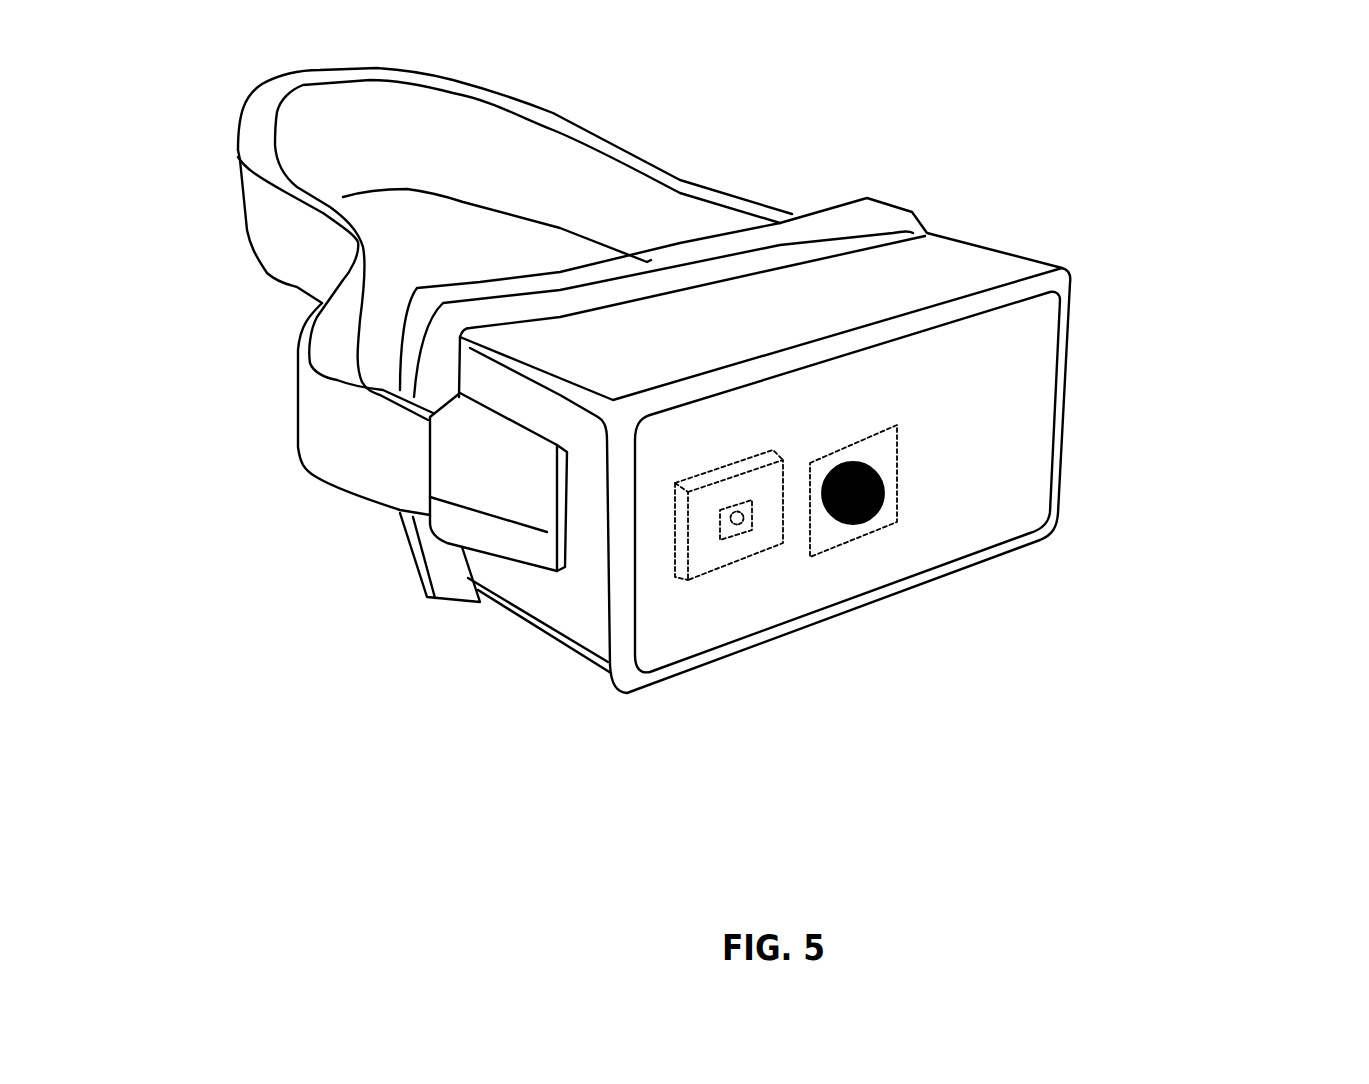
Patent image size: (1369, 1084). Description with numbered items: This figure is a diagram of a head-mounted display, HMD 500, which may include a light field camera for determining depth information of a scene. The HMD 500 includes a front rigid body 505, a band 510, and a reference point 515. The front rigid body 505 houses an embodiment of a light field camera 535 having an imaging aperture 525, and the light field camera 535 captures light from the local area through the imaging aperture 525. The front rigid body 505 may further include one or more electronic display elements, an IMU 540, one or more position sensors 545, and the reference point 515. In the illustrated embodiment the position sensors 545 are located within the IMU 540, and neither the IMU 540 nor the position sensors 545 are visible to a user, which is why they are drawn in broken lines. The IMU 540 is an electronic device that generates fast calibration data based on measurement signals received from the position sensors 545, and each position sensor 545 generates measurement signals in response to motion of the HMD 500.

The head-mounted display (HMD) 500 is at (115, 82).
The front rigid body 505 is at (1072, 278).
The band 510 is at (663, 152).
The reference point 515 is at (737, 526).
The imaging aperture 525 is at (884, 493).
The light field camera 535 is at (896, 463).
The IMU 540 is at (783, 532).
The position sensors 545 is at (722, 538).